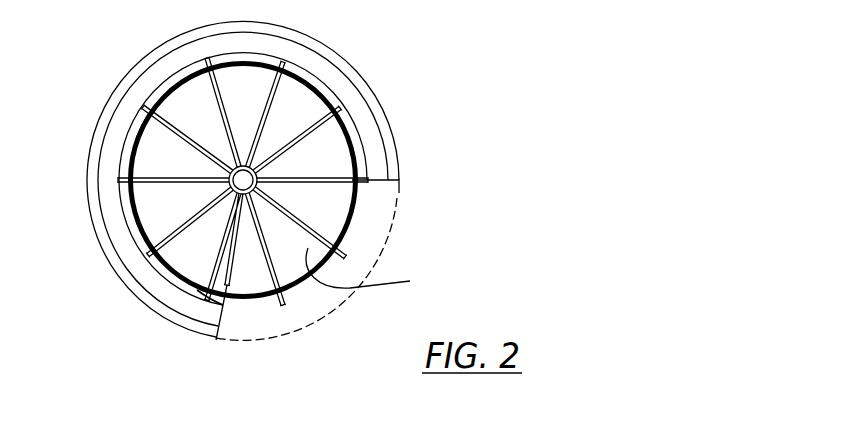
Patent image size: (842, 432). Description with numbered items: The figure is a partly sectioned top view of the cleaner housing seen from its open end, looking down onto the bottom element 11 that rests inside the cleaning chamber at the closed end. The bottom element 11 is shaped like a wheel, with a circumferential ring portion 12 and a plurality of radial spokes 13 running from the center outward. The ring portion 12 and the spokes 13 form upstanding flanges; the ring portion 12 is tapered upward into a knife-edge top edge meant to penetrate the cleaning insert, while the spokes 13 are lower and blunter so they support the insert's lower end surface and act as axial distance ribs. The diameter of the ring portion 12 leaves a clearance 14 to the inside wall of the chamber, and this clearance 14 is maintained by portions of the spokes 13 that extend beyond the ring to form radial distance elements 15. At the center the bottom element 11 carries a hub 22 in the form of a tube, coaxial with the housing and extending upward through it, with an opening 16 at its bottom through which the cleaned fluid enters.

The bottom element 11 is at (353, 238).
The ring portion 12 is at (360, 203).
The radial spokes 13 is at (410, 281).
The clearance 14 is at (357, 138).
The radial distance elements 15 is at (197, 298).
The opening 16 is at (246, 194).
The hub 22 is at (254, 168).